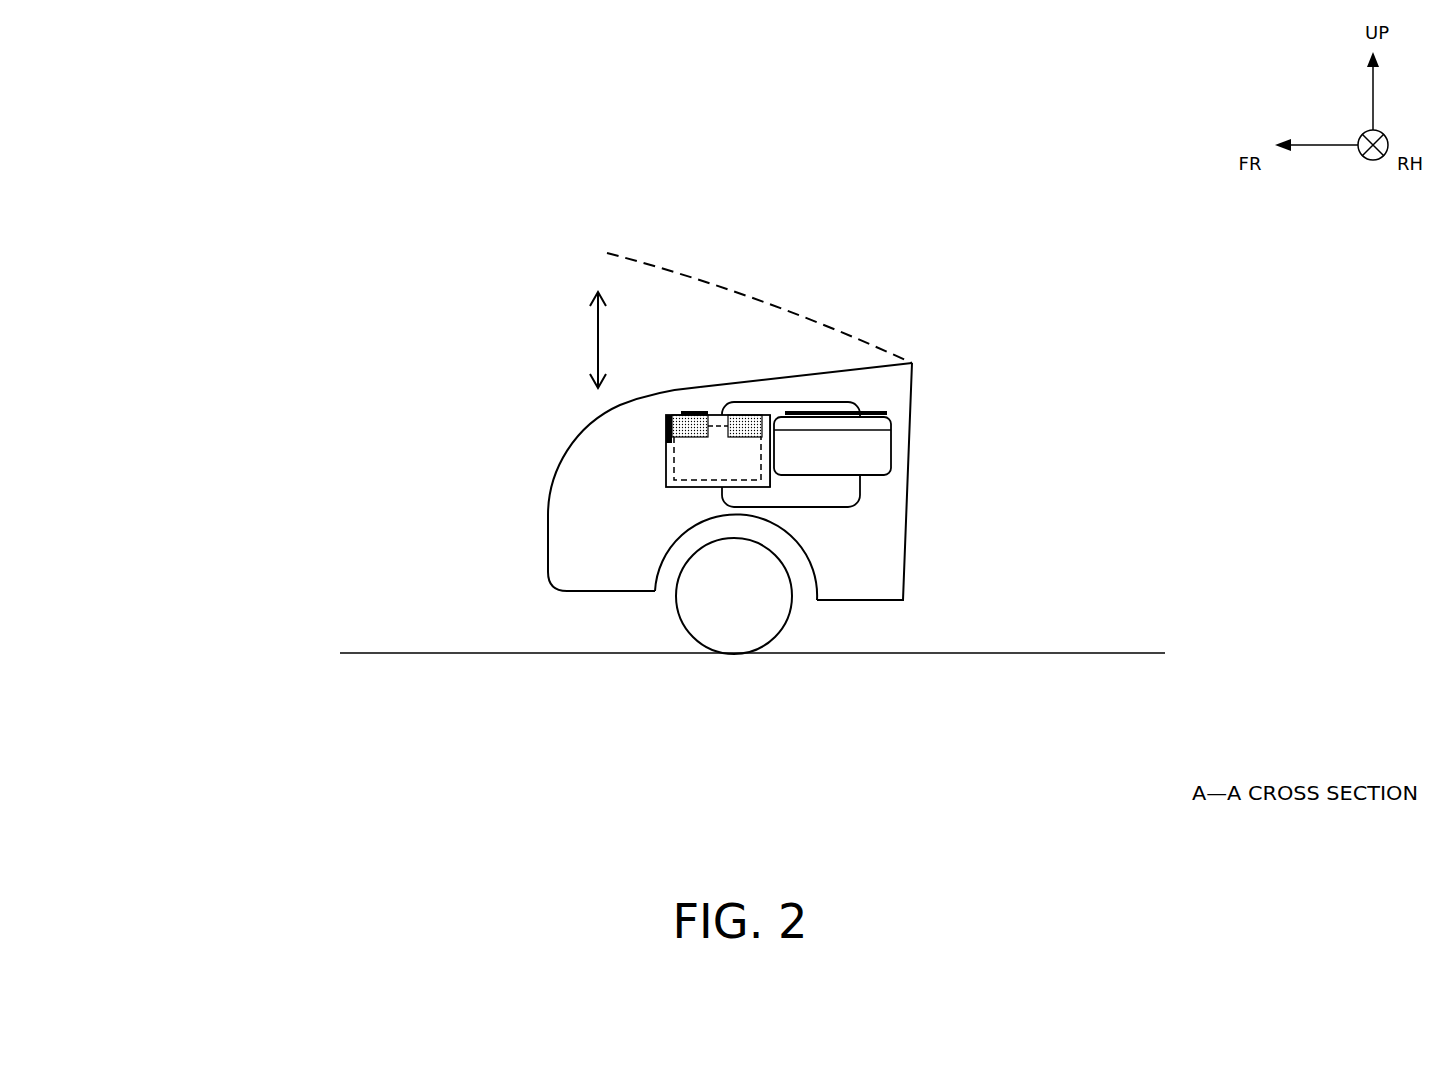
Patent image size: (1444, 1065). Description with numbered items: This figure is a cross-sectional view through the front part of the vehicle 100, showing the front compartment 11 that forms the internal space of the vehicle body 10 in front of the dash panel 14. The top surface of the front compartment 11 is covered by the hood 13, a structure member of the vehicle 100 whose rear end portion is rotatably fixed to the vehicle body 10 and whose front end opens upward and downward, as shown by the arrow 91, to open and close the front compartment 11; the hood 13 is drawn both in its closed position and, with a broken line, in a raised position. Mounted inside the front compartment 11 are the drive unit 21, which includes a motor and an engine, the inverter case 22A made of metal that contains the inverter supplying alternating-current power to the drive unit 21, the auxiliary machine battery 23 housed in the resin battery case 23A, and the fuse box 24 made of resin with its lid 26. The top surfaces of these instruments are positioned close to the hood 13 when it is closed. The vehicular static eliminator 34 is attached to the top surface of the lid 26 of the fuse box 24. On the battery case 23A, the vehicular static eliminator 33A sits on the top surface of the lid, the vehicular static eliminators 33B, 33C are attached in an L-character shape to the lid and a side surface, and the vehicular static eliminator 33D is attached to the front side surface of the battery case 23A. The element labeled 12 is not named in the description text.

The vehicle 100 is at (248, 343).
The vehicle body 10 is at (577, 447).
The front compartment 11 is at (620, 523).
The front panel 12 is at (555, 490).
The hood 13 is at (817, 367).
The dash panel 14 is at (908, 505).
The drive unit 21 is at (845, 402).
The inverter case 22A is at (775, 480).
The auxiliary machine battery 23 is at (715, 483).
The battery case 23A is at (675, 487).
The fuse box 24 is at (893, 455).
The lid 26 is at (892, 427).
The vehicular static eliminator 33A is at (693, 411).
The vehicular static eliminator 33B is at (712, 415).
The vehicular static eliminator 33C is at (747, 415).
The vehicular static eliminator 33D is at (666, 435).
The vehicular static eliminator 34 is at (888, 411).
The arrow 91 is at (598, 335).